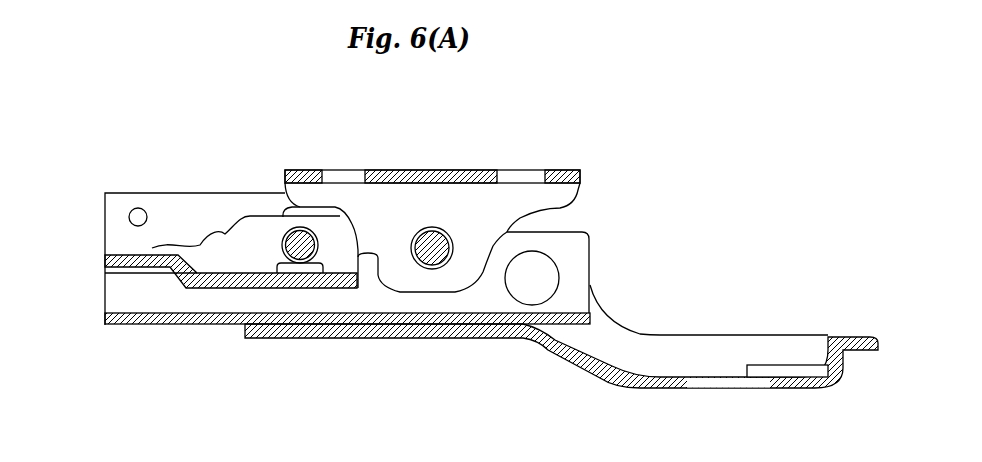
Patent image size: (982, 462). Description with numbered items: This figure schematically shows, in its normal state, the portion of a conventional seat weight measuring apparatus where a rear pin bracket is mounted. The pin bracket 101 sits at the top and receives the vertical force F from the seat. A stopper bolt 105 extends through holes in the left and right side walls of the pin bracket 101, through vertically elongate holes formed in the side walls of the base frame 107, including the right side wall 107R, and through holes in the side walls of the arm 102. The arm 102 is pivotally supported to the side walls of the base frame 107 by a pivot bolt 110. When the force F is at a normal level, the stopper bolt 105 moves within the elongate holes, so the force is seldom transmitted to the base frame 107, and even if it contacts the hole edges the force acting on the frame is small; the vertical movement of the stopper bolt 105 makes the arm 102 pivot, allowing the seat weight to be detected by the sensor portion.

The pin bracket 101 is at (447, 171).
The arm 102 is at (236, 286).
The stopper bolt 105 is at (432, 269).
The base frame 107 is at (167, 314).
The right side wall of base frame 107R is at (130, 295).
The pivot bolt 110 is at (283, 236).